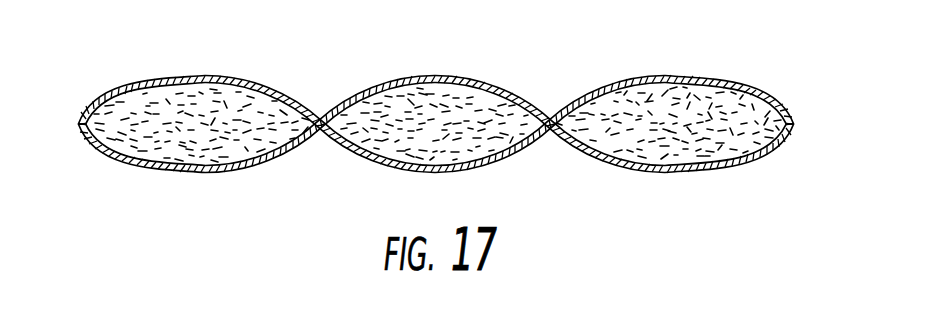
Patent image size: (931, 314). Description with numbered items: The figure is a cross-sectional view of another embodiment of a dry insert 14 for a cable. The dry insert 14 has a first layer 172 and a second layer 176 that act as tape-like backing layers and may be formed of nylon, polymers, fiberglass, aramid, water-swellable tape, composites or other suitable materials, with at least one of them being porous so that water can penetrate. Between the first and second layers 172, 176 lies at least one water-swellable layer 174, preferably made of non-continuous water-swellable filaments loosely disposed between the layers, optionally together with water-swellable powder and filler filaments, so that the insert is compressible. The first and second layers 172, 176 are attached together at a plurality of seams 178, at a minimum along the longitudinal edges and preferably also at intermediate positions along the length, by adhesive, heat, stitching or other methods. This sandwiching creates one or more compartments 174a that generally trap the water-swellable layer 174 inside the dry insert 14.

The dry insert 14 is at (434, 130).
The first layer 172 is at (374, 157).
The water-swellable layer 174 is at (473, 150).
The compartment 174a is at (135, 107).
The second layer 176 is at (375, 84).
The seams 178 is at (790, 123).